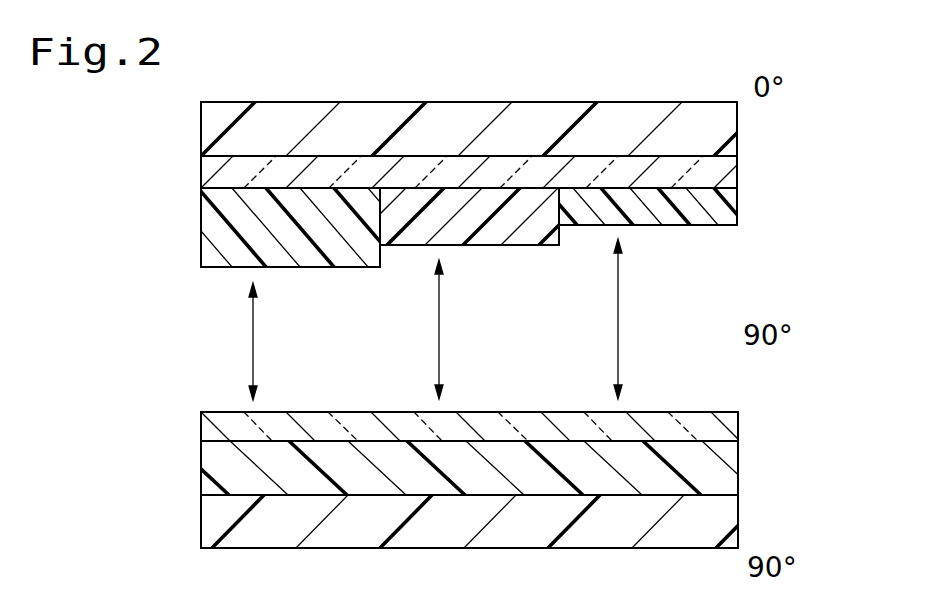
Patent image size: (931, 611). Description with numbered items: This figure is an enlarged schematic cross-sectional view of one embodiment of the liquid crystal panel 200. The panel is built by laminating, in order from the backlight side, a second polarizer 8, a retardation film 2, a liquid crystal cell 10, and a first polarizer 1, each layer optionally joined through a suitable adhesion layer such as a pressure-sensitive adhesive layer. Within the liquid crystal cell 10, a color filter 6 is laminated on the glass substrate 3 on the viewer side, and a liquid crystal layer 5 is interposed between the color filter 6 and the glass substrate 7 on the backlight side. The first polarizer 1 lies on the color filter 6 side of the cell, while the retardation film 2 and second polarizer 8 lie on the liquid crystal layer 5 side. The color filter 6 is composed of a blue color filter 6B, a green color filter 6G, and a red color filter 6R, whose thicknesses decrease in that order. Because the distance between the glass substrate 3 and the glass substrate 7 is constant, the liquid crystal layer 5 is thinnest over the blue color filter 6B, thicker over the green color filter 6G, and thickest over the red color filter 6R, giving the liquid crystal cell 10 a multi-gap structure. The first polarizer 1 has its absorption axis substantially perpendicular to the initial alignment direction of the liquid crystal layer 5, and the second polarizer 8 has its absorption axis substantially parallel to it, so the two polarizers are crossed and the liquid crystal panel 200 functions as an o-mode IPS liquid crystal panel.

The liquid crystal panel 200 is at (673, 83).
The first polarizer 1 is at (732, 123).
The glass substrate 3 is at (732, 172).
The color filter 6 is at (438, 254).
The blue color filter 6B is at (320, 267).
The green color filter 6G is at (508, 245).
The red color filter 6R is at (680, 225).
The liquid crystal layer 5 is at (184, 275).
The liquid crystal cell 10 is at (807, 160).
The glass substrate 7 is at (735, 423).
The retardation film 2 is at (735, 462).
The second polarizer 8 is at (735, 512).